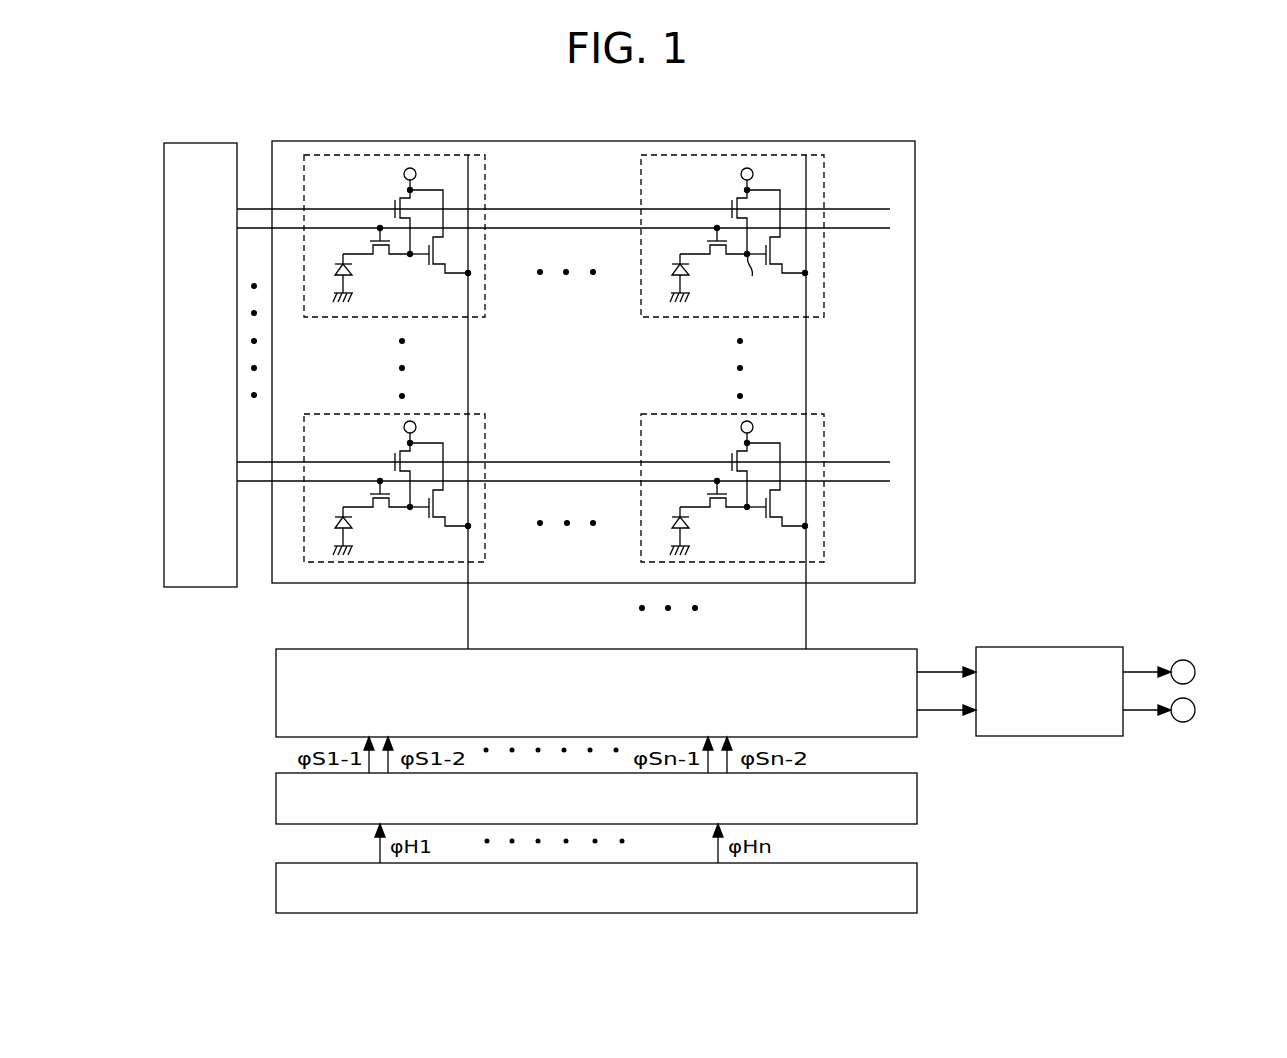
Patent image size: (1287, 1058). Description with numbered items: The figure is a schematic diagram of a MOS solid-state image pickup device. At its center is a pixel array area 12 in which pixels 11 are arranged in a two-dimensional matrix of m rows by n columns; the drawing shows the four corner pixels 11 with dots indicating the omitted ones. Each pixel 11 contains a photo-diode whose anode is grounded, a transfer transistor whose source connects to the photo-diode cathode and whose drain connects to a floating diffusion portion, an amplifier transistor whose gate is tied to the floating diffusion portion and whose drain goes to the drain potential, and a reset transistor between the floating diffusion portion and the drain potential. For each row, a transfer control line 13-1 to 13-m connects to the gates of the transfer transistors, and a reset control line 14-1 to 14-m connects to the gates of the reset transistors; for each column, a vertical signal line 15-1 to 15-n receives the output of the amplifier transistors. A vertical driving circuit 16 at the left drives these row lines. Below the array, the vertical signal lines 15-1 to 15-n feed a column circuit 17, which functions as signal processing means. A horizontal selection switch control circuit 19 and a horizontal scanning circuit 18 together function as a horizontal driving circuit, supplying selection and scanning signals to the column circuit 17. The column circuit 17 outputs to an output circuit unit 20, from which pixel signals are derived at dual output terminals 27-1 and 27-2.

The pixel 11 is at (641, 270).
The pixel array area 12 is at (604, 141).
The transfer control line 13-1 is at (868, 228).
The transfer control line 13-m is at (868, 481).
The reset control line 14-1 is at (852, 209).
The reset control line 14-m is at (852, 462).
The vertical signal line 15-1 is at (469, 606).
The vertical signal line 15-n is at (807, 606).
The vertical driving circuit 16 is at (201, 143).
The column circuit 17 is at (276, 698).
The horizontal scanning circuit 18 is at (276, 884).
The horizontal selection switch control circuit 19 is at (276, 796).
The output circuit unit 20 is at (1044, 647).
The output terminal 27-1 is at (1183, 660).
The output terminal 27-2 is at (1183, 722).